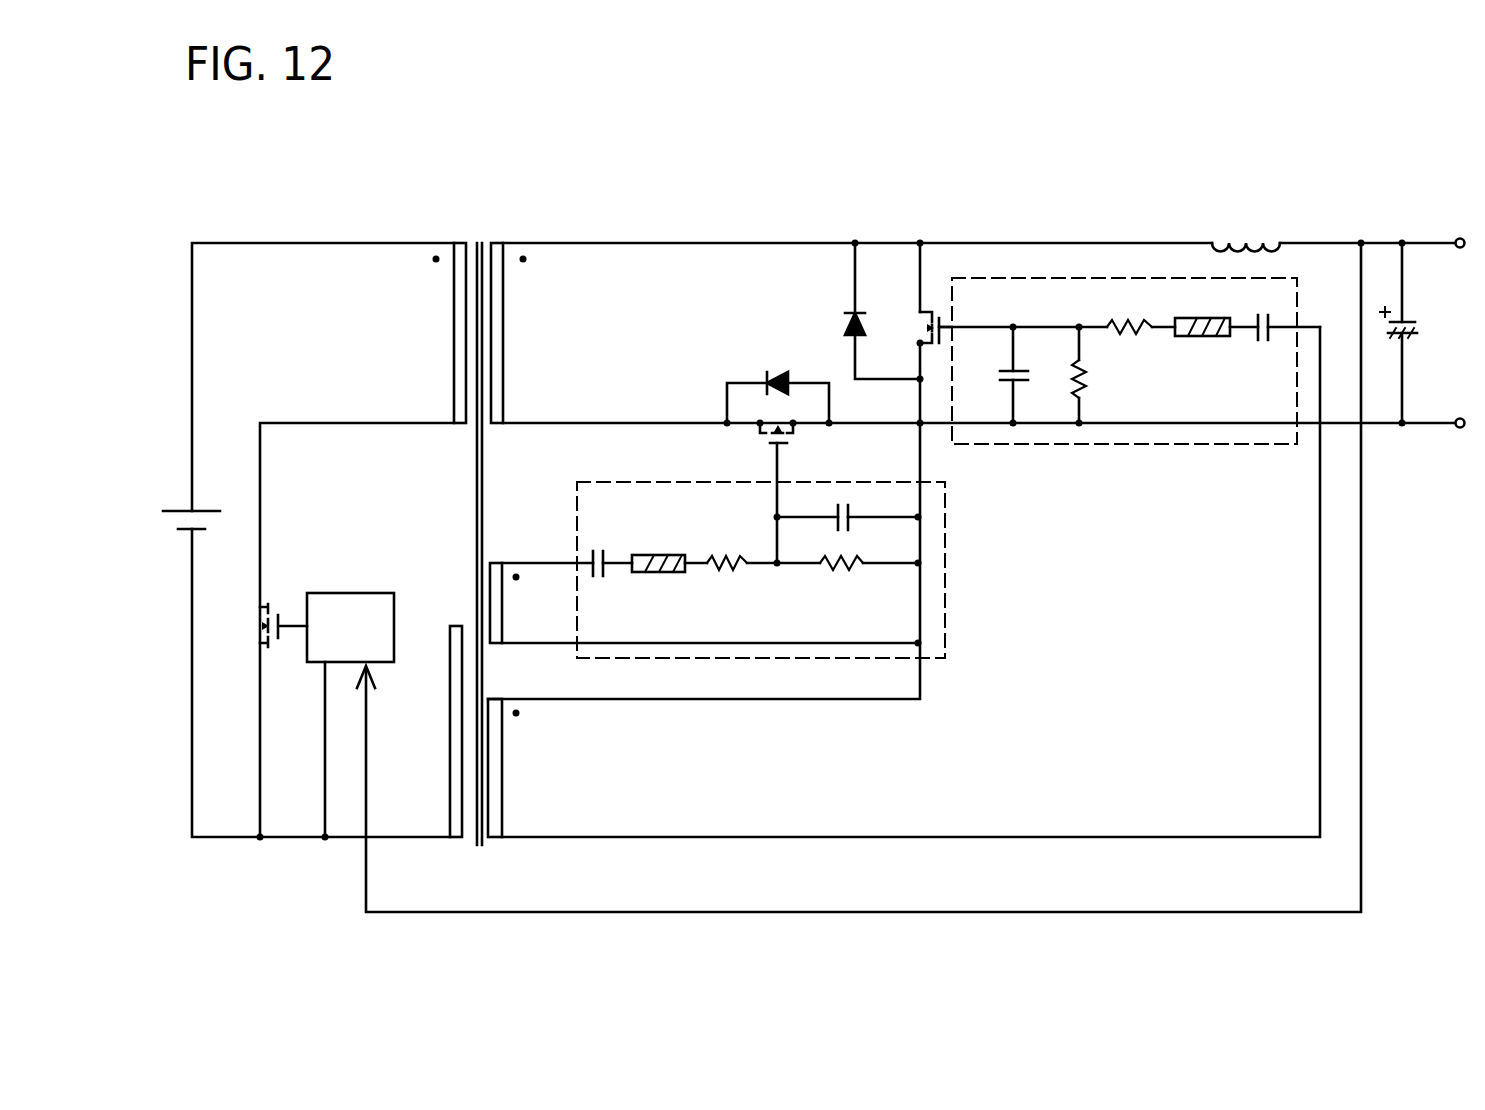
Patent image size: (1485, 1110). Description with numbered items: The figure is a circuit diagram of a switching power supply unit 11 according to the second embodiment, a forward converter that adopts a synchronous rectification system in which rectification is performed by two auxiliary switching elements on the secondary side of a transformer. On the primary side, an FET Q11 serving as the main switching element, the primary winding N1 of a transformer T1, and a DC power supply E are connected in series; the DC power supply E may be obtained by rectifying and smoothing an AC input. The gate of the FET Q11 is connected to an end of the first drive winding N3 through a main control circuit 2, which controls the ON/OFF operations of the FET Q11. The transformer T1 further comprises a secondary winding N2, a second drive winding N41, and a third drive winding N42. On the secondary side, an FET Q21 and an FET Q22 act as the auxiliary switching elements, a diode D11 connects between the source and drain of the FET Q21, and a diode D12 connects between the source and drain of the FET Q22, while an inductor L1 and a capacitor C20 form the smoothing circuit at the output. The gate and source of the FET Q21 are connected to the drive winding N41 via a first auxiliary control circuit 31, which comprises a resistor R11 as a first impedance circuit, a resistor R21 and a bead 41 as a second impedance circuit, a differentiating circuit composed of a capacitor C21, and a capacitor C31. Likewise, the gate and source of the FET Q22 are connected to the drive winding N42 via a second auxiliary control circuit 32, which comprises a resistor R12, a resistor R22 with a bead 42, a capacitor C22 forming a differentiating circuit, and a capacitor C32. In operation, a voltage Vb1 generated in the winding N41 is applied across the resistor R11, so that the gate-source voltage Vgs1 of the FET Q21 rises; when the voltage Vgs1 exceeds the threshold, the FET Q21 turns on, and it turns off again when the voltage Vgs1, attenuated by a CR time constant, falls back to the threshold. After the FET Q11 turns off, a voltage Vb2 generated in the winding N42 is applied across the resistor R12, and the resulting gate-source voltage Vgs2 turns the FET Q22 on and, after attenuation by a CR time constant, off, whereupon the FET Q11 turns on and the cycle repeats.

The switching power supply unit 11 is at (1382, 157).
The main control circuit 2 is at (347, 600).
The first auxiliary control circuit 31 is at (945, 547).
The second auxiliary control circuit 32 is at (1163, 440).
The bead 41 is at (658, 547).
The bead 42 is at (1202, 309).
The DC power supply E is at (183, 505).
The transformer T1 is at (482, 530).
The primary winding N1 is at (438, 333).
The secondary winding N2 is at (519, 333).
The first drive winding N3 is at (431, 731).
The second drive winding N41 is at (496, 562).
The third drive winding N42 is at (497, 840).
The FET Q11 is at (257, 625).
The FET Q21 is at (799, 443).
The FET Q22 is at (911, 333).
The diode D11 is at (778, 381).
The diode D12 is at (857, 311).
The capacitor C21 is at (605, 549).
The capacitor C31 is at (867, 506).
The capacitor C32 is at (996, 361).
The capacitor C22 is at (1261, 310).
The capacitor C20 is at (1428, 322).
The resistor R21 is at (726, 546).
The resistor R11 is at (829, 553).
The resistor R22 is at (1129, 310).
The resistor R12 is at (1054, 387).
The inductor L1 is at (1280, 222).
The voltage Vb1 is at (517, 583).
The voltage Vb2 is at (513, 730).
The gate-source voltage Vgs1 is at (895, 580).
The gate-source voltage Vgs2 is at (1114, 353).